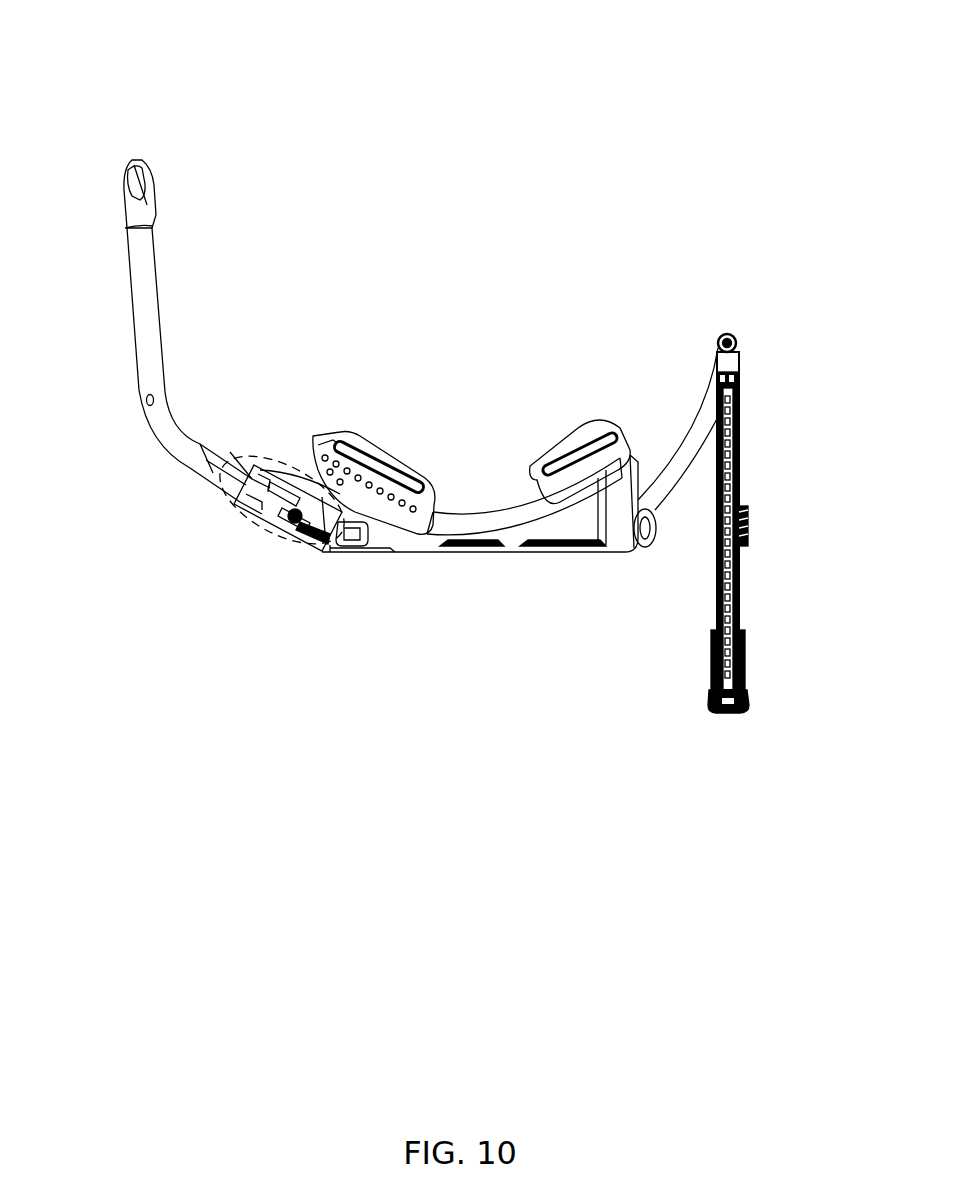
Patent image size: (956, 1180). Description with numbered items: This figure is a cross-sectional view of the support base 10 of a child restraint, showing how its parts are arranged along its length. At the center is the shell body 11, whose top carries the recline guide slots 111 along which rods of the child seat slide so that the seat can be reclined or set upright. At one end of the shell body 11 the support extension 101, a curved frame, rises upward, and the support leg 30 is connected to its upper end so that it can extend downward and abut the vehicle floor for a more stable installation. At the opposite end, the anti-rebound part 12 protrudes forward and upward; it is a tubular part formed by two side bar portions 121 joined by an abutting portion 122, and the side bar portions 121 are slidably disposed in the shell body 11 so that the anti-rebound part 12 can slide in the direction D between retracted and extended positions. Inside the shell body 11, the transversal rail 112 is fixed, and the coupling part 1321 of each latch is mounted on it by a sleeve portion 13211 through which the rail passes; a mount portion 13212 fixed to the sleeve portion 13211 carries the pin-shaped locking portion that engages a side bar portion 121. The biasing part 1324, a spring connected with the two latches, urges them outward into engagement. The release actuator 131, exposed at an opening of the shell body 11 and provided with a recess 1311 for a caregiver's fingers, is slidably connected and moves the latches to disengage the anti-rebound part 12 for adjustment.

The support base 10 is at (62, 51).
The shell body 11 is at (500, 522).
The recline guide slot 111 is at (418, 484).
The transversal rail 112 is at (356, 448).
The anti-rebound part 12 is at (305, 310).
The side bar portion 121 is at (226, 478).
The abutting portion 122 is at (158, 412).
The release actuator 131 is at (246, 508).
The recess 1311 is at (279, 496).
The coupling part 1321 is at (332, 640).
The sleeve portion 13211 is at (305, 536).
The mount portion 13212 is at (290, 518).
The biasing part 1324 is at (336, 536).
The support extension 101 is at (704, 428).
The support leg 30 is at (730, 472).
The direction of movement D is at (233, 502).